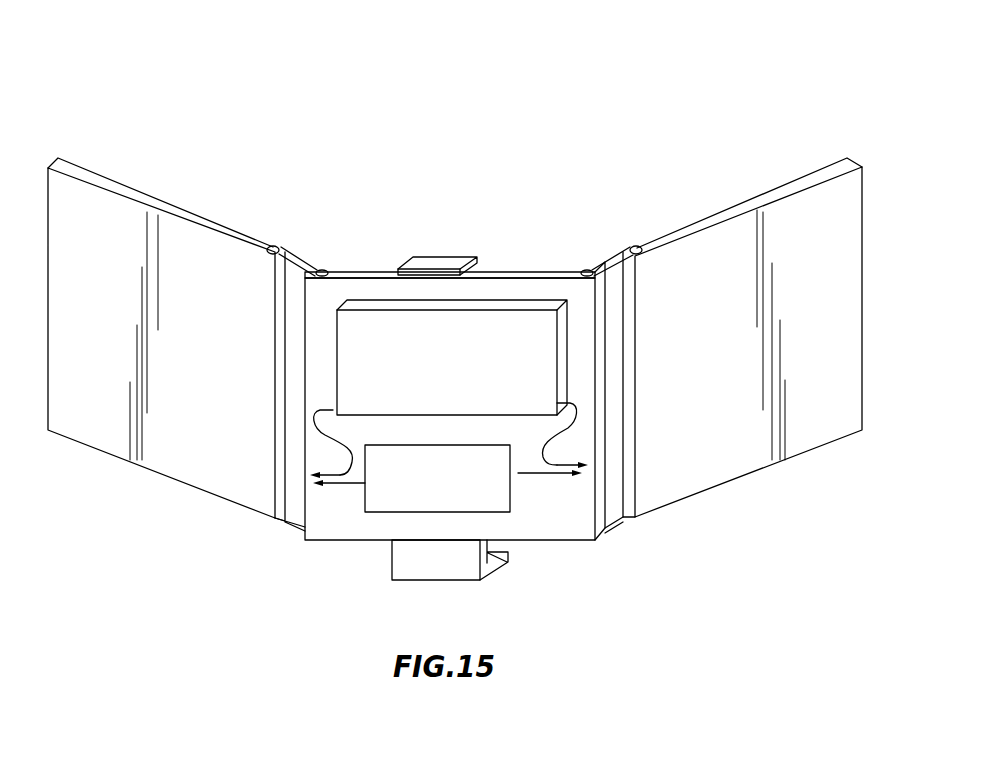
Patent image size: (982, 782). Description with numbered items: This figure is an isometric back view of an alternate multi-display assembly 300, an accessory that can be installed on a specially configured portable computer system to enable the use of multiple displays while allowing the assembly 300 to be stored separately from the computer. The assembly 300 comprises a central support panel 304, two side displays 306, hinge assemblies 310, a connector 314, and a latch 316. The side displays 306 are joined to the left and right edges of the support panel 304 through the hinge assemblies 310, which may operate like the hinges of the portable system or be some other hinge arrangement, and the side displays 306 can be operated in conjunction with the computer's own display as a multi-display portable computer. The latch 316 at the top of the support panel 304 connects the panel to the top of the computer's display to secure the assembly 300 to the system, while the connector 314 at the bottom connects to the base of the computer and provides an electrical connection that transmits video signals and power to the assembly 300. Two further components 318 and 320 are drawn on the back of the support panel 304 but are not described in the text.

The multi-display assembly 300 is at (403, 181).
The support panel 304 is at (513, 258).
The side displays 306 is at (145, 195).
The hinge assemblies 310 is at (303, 250).
The connector 314 is at (500, 567).
The latch 316 is at (435, 255).
The display unit 318 is at (464, 384).
The control unit 320 is at (456, 493).